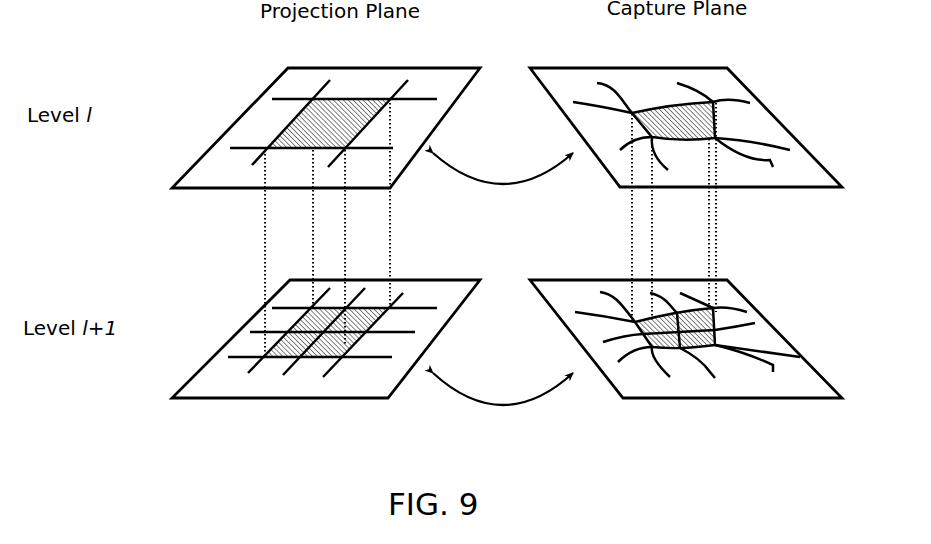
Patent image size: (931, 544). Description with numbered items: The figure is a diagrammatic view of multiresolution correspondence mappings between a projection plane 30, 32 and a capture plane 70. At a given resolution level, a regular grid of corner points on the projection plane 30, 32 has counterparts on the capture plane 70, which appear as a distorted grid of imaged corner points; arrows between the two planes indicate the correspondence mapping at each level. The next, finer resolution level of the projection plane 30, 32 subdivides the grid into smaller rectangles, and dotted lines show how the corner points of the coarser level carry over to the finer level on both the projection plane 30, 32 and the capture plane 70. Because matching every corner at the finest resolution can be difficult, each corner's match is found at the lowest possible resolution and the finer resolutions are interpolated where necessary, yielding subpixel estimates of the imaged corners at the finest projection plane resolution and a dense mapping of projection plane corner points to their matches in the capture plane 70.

The projection plane 30 is at (326, 213).
The projection plane 32 is at (326, 213).
The capture plane 70 is at (686, 211).